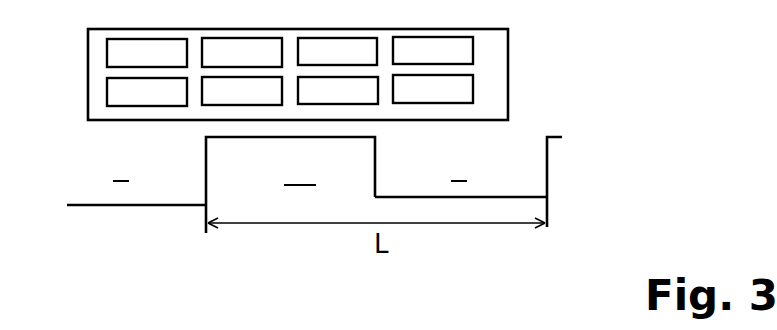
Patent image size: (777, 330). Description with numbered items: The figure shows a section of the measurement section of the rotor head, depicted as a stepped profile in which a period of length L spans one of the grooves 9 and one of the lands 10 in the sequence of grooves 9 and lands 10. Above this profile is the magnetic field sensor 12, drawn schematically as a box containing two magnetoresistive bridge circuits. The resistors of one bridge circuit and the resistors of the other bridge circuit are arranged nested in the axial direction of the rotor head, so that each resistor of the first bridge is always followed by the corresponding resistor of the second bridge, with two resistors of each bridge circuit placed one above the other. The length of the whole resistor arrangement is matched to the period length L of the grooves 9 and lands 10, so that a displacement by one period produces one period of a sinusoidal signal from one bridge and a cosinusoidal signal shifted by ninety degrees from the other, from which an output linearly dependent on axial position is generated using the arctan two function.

The magnetic field sensor 12 is at (97, 77).
The grooves 9 is at (307, 180).
The lands 10 is at (384, 185).